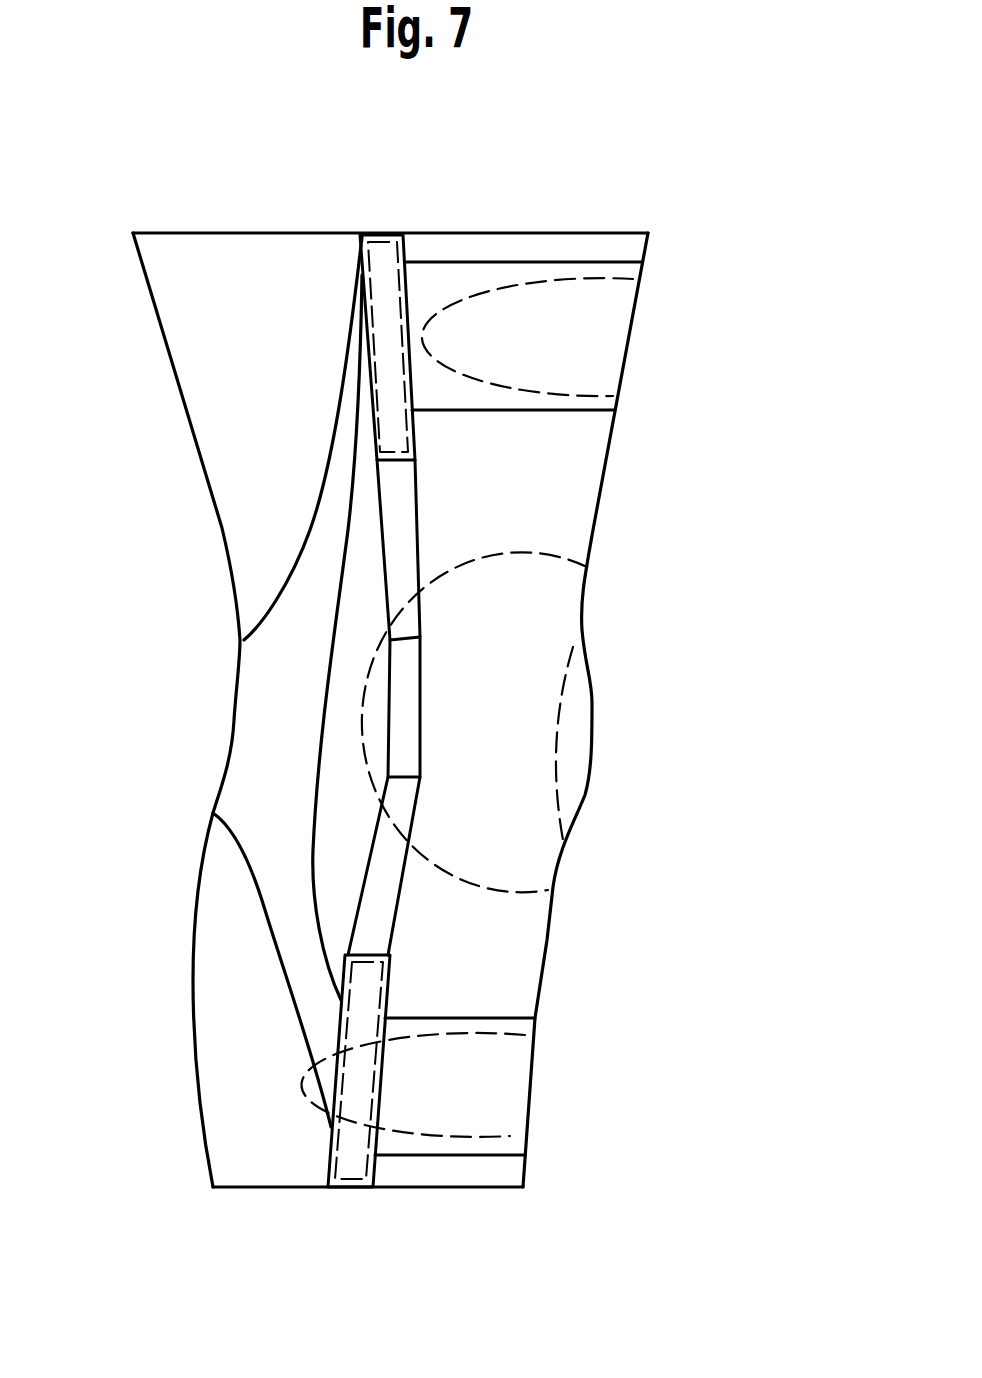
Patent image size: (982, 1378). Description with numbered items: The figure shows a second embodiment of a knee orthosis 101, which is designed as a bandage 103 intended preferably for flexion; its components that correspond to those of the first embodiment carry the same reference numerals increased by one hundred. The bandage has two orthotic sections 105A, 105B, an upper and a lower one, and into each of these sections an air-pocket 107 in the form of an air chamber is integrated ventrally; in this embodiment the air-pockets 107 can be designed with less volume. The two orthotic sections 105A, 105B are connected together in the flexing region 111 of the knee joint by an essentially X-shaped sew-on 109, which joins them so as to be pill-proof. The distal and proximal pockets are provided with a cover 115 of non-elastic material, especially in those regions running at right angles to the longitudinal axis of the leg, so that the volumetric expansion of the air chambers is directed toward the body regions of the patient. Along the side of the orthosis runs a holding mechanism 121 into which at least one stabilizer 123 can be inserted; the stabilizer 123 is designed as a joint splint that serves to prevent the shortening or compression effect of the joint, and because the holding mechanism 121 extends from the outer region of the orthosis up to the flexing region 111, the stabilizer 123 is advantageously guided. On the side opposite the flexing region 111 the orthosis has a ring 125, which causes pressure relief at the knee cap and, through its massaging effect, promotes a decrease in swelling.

The knee orthosis 101 is at (612, 200).
The bandage 103 is at (197, 1087).
The first orthotic section 105A is at (760, 235).
The second orthotic section 105B is at (752, 993).
The air-pocket 107 is at (597, 363).
The X-shaped sew-on 109 is at (293, 568).
The flexing region 111 is at (196, 728).
The cover 115 is at (603, 272).
The holding mechanism 121 is at (405, 247).
The stabilizer 123 is at (393, 918).
The ring 125 is at (537, 675).